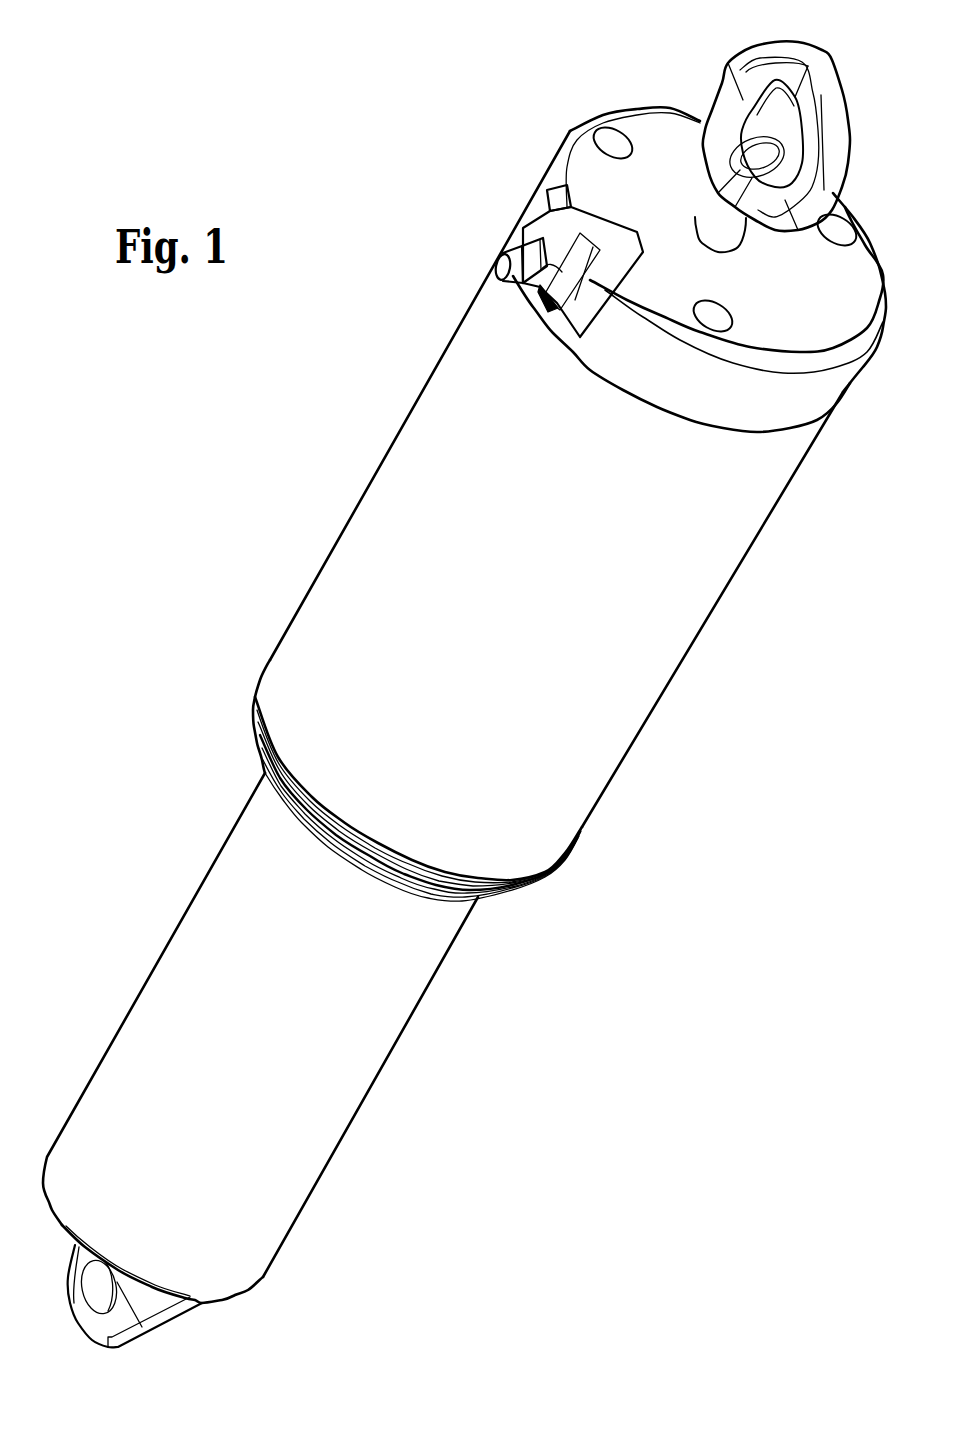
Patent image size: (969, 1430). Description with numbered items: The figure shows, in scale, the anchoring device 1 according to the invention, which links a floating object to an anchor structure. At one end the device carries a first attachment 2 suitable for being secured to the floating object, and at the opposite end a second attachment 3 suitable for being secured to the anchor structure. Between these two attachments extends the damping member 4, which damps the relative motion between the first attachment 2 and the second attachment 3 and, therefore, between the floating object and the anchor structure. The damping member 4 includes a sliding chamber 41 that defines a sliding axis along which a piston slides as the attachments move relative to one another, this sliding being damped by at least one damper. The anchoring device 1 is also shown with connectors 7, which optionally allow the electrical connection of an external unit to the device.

The anchoring device 1 is at (464, 691).
The first attachment 2 is at (684, 80).
The second attachment 3 is at (184, 1345).
The damping member 4 is at (207, 456).
The connectors 7 is at (458, 262).
The sliding chamber 41 is at (205, 789).